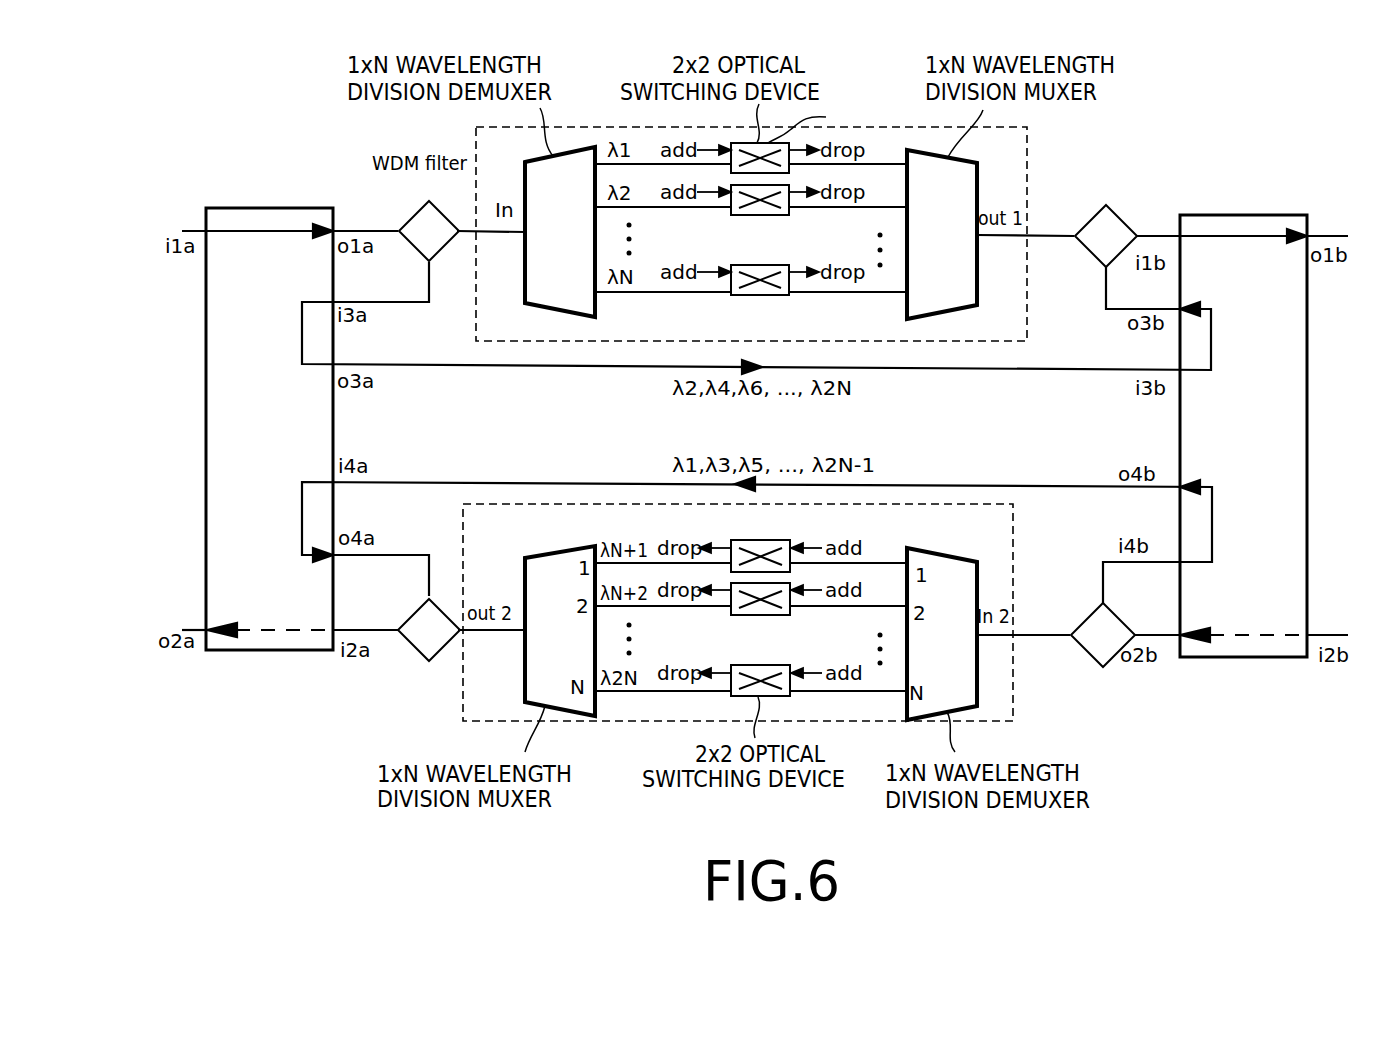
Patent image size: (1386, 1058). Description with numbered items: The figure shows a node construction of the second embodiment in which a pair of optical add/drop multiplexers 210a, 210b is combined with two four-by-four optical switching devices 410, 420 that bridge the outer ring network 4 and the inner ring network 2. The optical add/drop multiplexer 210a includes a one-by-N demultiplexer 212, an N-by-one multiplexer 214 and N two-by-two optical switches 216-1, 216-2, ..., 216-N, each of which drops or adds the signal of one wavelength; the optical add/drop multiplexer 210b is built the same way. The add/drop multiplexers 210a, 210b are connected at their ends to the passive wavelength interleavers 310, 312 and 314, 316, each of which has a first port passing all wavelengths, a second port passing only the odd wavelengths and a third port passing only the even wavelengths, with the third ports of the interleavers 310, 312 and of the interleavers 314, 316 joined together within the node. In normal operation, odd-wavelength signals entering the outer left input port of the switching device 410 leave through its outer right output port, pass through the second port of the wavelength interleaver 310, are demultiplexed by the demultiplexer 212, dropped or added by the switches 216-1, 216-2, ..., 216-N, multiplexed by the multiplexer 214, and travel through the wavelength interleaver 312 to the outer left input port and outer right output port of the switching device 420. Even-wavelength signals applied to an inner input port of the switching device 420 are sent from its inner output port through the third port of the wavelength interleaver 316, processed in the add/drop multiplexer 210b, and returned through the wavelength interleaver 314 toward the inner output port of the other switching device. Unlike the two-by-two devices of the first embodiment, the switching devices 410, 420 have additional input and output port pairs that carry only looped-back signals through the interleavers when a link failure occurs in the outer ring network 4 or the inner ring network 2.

The optical add/drop multiplexer 210a is at (1027, 305).
The optical add/drop multiplexer 210b is at (1013, 547).
The 1×N demultiplexer 212 is at (563, 310).
The N×1 multiplexer 214 is at (950, 315).
The 2×2 optical switch 216-1 is at (811, 138).
The 2×2 optical switch 216-2 is at (762, 215).
The 2×2 optical switch 216-N is at (762, 295).
The wavelength interleaver 310 is at (414, 247).
The wavelength interleaver 312 is at (1116, 212).
The wavelength interleaver 314 is at (413, 646).
The wavelength interleaver 316 is at (1103, 668).
The 4×4 optical switching device 410 is at (245, 651).
The 4×4 optical switching device 420 is at (1228, 659).
The outer ring network 4 is at (1160, 231).
The inner ring network 2 is at (1160, 632).